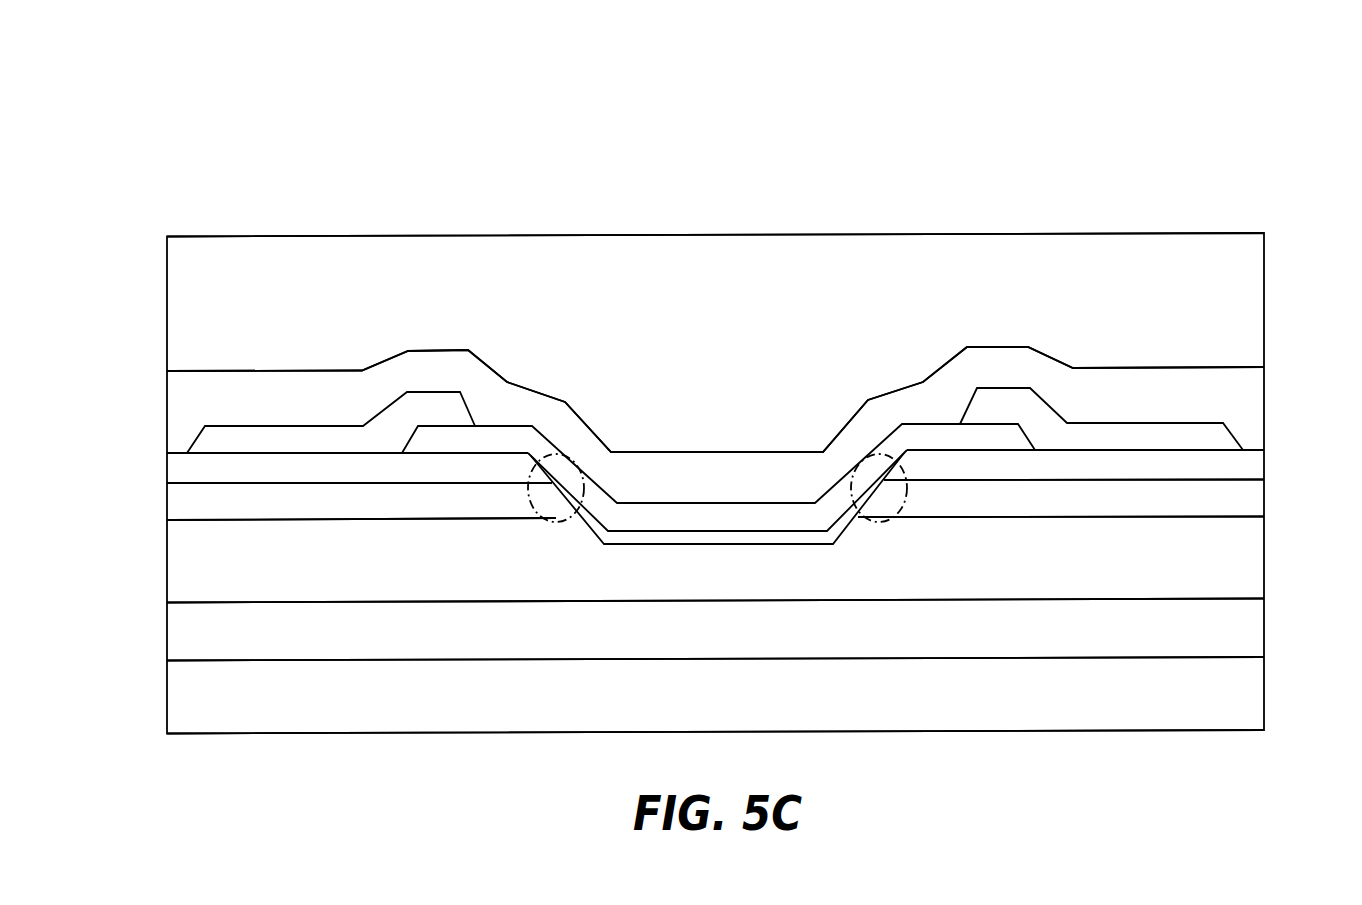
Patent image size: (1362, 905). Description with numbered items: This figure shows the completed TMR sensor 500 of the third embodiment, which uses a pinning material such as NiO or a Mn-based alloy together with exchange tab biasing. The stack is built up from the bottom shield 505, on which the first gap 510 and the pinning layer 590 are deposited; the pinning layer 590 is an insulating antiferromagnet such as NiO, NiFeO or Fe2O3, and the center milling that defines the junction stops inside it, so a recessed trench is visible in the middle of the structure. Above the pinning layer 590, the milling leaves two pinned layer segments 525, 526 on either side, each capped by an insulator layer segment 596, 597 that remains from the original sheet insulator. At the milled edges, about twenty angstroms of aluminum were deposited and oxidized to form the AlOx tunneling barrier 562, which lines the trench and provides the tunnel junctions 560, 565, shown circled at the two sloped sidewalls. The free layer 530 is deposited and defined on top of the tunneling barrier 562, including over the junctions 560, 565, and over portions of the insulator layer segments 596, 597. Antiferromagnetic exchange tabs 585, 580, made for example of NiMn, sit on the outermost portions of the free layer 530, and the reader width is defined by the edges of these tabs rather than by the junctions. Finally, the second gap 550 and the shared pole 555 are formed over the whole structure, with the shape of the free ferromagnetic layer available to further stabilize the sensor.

The TMR sensor 500 is at (1102, 158).
The bottom shield 505 is at (1235, 707).
The first gap 510 is at (1235, 645).
The pinning layer 590 is at (1235, 577).
The pinned layer segment 525 is at (197, 503).
The pinned layer segment 526 is at (1235, 508).
The insulator layer segment 596 is at (195, 464).
The insulator layer segment 597 is at (1235, 475).
The free layer 530 is at (910, 438).
The antiferromagnetic exchange tab 585 is at (390, 407).
The antiferromagnetic exchange tab 580 is at (1047, 402).
The second gap 550 is at (1235, 405).
The shared pole 555 is at (1235, 320).
The tunnel junction 560 is at (552, 520).
The tunneling barrier 562 is at (633, 537).
The tunnel junction 565 is at (896, 512).